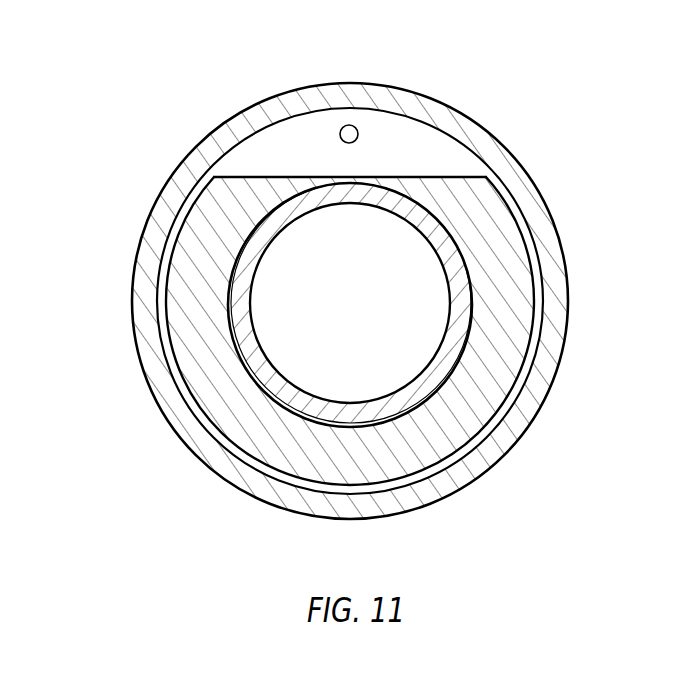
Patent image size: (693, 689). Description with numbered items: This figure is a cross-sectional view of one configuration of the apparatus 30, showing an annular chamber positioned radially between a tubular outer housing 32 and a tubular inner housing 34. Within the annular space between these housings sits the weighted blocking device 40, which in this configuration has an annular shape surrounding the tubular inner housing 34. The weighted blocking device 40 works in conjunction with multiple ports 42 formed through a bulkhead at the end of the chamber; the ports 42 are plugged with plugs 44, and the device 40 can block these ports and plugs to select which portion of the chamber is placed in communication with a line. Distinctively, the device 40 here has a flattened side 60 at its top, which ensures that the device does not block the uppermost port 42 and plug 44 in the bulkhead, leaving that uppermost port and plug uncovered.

The apparatus 30 is at (590, 105).
The tubular outer housing 32 is at (132, 318).
The tubular inner housing 34 is at (252, 307).
The weighted blocking device 40 is at (523, 232).
The port 42 is at (362, 127).
The plug 44 is at (328, 135).
The flattened side 60 is at (235, 178).